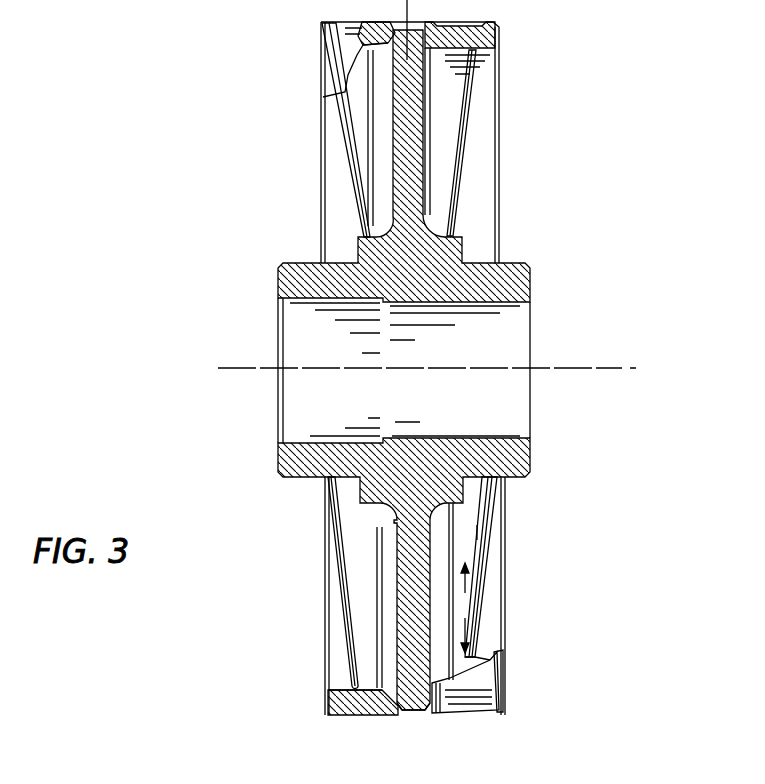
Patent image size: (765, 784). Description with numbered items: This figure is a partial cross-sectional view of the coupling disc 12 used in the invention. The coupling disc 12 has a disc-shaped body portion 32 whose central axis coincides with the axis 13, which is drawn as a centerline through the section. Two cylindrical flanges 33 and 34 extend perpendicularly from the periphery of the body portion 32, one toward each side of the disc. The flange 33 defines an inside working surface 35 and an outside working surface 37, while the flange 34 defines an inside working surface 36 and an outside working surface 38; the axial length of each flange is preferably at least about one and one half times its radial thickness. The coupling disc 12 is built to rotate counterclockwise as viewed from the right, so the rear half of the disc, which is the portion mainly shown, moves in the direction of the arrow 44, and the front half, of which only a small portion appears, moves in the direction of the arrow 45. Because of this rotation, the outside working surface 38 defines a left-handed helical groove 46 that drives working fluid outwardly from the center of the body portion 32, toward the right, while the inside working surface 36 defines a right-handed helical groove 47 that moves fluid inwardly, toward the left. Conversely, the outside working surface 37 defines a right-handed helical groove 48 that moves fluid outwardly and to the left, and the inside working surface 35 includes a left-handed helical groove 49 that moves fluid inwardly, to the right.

The coupling disc 12 is at (576, 161).
The axis 13 is at (595, 368).
The disc-shaped body portion 32 is at (402, 543).
The cylindrical flange 33 is at (366, 715).
The cylindrical flange 34 is at (482, 39).
The inside working surface 35 is at (350, 690).
The inside working surface 36 is at (472, 531).
The outside working surface 37 is at (380, 715).
The outside working surface 38 is at (468, 713).
The arrow 44 is at (478, 602).
The arrow 45 is at (455, 629).
The left-handed helical groove 46 is at (494, 712).
The right-handed helical groove 47 is at (487, 562).
The right-handed helical groove 48 is at (333, 55).
The left-handed helical groove 49 is at (342, 600).